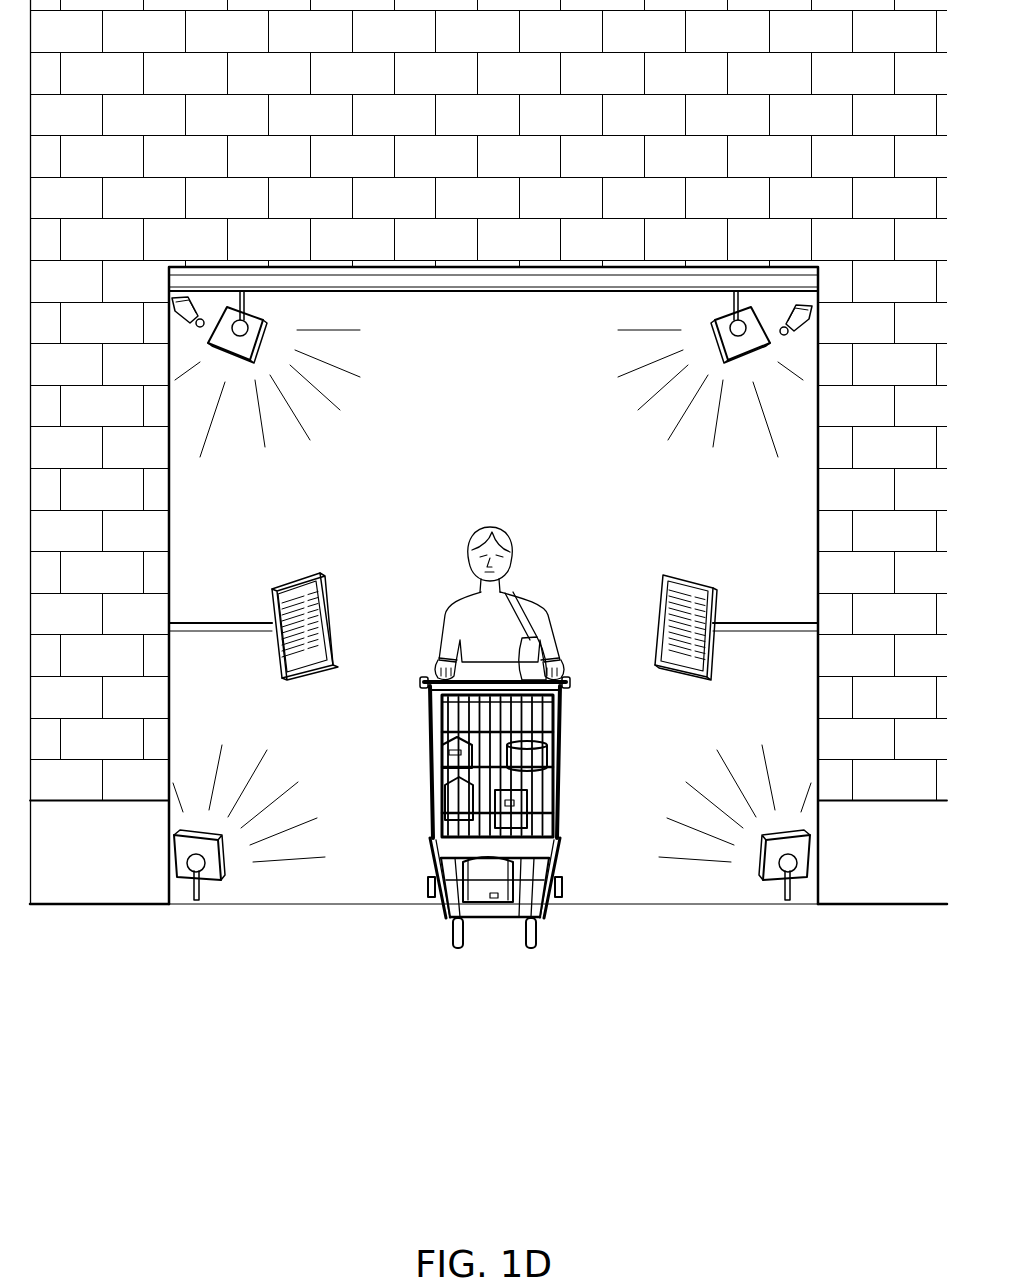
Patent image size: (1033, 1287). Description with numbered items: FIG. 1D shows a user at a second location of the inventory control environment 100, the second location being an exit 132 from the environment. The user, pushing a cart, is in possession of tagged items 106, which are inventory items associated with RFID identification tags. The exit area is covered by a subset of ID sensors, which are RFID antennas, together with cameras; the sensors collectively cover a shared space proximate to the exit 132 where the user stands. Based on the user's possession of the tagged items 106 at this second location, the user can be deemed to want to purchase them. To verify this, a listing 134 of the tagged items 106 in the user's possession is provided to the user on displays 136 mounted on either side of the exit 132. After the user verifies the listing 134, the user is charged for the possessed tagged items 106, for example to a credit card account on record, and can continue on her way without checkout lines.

The inventory control environment 100 is at (570, 366).
The exit 132 is at (545, 1013).
The tagged items 106 is at (572, 741).
The listing 134 is at (677, 602).
The display 136 is at (726, 630).